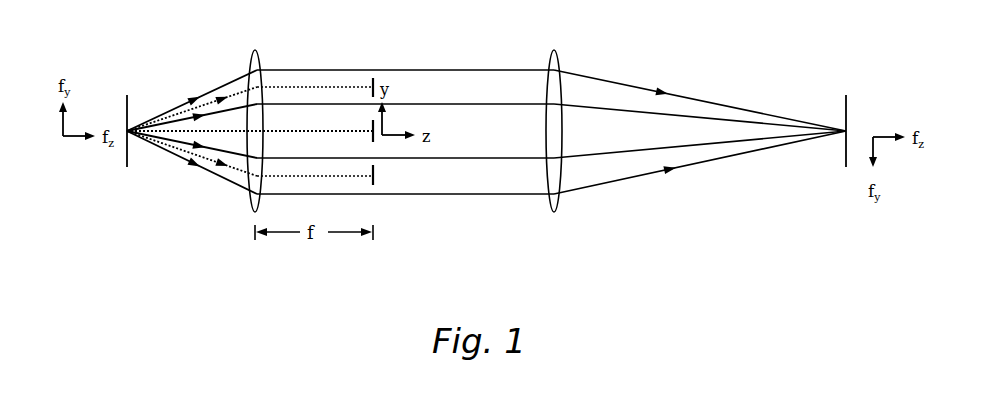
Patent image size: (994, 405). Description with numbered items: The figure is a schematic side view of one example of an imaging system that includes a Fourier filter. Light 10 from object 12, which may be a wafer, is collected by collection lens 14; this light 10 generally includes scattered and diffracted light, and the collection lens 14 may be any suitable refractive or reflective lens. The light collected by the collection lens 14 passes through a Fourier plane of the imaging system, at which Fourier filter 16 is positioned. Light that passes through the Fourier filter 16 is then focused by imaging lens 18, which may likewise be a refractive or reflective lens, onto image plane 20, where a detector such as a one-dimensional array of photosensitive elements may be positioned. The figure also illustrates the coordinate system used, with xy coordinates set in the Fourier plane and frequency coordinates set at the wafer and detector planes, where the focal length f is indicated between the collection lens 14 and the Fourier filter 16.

The light 10 is at (220, 87).
The object 12 is at (126, 164).
The collection lens 14 is at (262, 57).
The Fourier filter 16 is at (375, 80).
The imaging lens 18 is at (558, 60).
The image plane 20 is at (848, 103).